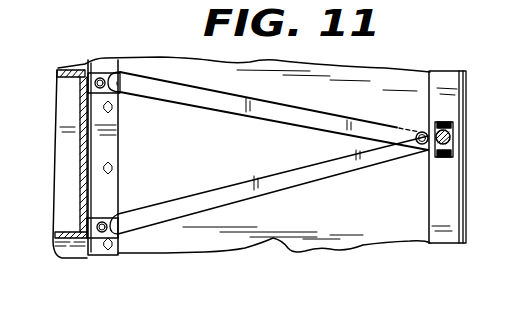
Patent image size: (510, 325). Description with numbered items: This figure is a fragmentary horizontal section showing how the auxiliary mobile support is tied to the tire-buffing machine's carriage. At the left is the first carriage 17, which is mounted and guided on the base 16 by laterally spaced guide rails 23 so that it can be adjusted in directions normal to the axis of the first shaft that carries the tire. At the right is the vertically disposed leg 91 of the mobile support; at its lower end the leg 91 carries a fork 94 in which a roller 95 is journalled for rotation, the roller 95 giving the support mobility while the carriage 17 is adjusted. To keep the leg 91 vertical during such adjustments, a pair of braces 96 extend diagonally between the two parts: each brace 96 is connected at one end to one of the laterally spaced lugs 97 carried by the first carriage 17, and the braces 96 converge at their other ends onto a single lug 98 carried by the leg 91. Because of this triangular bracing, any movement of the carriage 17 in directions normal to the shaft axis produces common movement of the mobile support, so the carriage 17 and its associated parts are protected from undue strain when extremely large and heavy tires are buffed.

The base 16 is at (337, 241).
The first carriage 17 is at (63, 66).
The guide rails 23 is at (110, 150).
The lugs 97 is at (100, 71).
The braces 96 is at (329, 116).
The lug 98 is at (427, 152).
The fork 94 is at (453, 138).
The roller 95 is at (448, 126).
The leg 91 is at (456, 143).